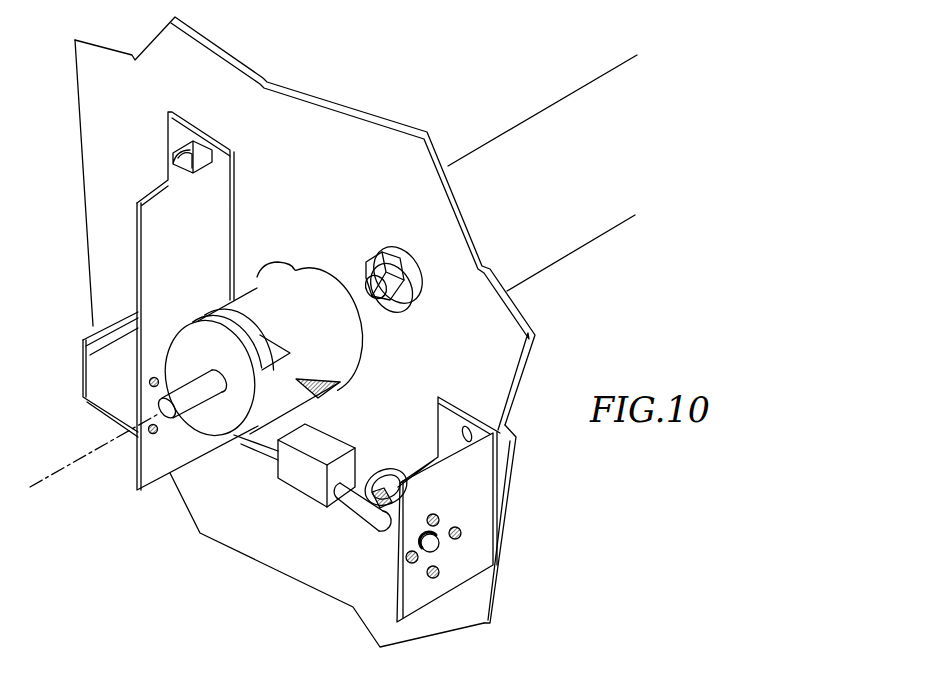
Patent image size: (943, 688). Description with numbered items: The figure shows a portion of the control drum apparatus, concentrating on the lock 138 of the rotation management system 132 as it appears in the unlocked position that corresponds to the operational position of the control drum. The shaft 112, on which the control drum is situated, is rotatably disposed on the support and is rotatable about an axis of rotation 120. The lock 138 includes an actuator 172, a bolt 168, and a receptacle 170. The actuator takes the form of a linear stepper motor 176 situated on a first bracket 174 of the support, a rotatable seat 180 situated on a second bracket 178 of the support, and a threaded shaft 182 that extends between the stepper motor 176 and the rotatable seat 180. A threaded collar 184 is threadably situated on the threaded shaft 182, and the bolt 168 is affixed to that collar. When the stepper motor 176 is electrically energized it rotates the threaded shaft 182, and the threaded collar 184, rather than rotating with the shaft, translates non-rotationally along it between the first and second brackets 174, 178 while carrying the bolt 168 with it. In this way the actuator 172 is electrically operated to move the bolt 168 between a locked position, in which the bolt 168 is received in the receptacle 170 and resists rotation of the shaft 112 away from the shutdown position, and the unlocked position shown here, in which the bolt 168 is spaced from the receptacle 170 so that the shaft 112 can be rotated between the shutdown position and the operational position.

The shaft 112 is at (518, 118).
The axis of rotation 120 is at (73, 468).
The rotation management system 132 is at (348, 436).
The lock 138 is at (362, 458).
The bolt 168 is at (308, 482).
The receptacle 170 is at (260, 337).
The actuator 172 is at (80, 350).
The first bracket 174 is at (130, 467).
The linear stepper motor 176 is at (83, 362).
The second bracket 178 is at (462, 578).
The rotatable seat 180 is at (405, 578).
The threaded shaft 182 is at (353, 508).
The threaded collar 184 is at (275, 468).